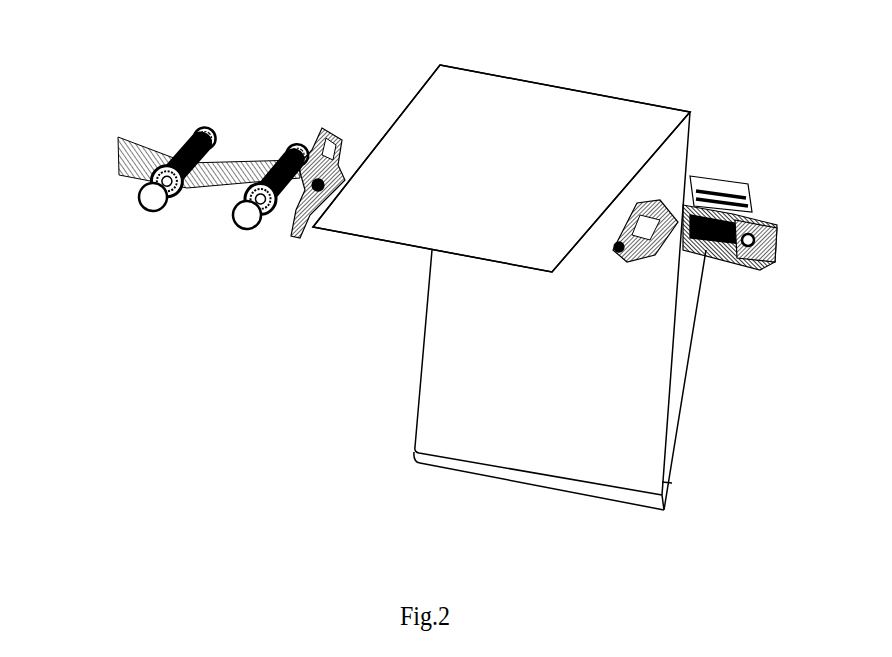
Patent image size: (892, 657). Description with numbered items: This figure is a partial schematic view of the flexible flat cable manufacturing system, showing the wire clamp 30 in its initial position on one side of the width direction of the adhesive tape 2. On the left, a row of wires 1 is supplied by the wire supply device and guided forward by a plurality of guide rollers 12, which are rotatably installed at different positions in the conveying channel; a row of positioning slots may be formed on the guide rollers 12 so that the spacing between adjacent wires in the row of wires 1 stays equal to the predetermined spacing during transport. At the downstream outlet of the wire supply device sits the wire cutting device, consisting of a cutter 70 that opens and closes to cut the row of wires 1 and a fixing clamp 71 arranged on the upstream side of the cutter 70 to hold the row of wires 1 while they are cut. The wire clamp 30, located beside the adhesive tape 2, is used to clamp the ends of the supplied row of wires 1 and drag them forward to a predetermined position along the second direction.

The row of wires 1 is at (123, 150).
The adhesive tape 2 is at (480, 212).
The guide rollers 12 is at (185, 140).
The wire clamp 30 is at (668, 212).
The cutter 70 is at (352, 157).
The fixing clamp 71 is at (323, 128).